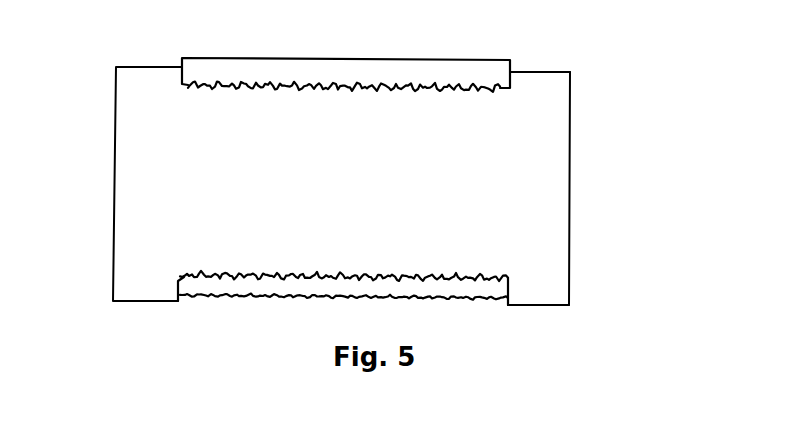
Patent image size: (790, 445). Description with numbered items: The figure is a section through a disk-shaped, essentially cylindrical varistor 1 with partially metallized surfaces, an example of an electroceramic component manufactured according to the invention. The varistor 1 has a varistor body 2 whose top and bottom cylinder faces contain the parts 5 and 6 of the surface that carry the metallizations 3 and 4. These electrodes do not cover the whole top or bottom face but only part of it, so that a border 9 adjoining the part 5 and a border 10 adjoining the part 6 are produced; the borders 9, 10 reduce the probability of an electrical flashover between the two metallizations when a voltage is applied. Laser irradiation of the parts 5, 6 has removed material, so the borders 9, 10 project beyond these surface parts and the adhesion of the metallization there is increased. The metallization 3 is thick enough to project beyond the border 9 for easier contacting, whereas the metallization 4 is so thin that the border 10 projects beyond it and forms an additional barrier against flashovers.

The varistor 1 is at (318, 171).
The varistor body 2 is at (522, 180).
The metallization 3 is at (475, 65).
The metallization 4 is at (463, 295).
The part of the surface 5 is at (488, 87).
The part of the surface 6 is at (463, 277).
The border 9 is at (548, 72).
The border 10 is at (538, 307).